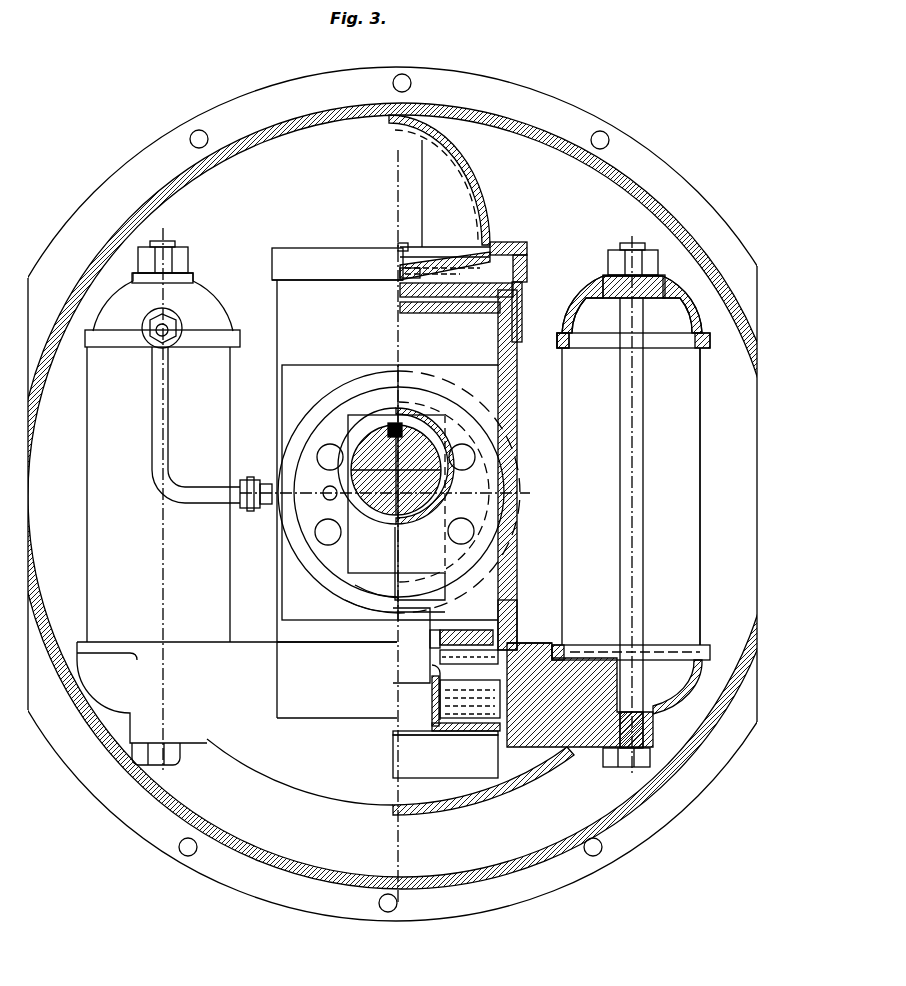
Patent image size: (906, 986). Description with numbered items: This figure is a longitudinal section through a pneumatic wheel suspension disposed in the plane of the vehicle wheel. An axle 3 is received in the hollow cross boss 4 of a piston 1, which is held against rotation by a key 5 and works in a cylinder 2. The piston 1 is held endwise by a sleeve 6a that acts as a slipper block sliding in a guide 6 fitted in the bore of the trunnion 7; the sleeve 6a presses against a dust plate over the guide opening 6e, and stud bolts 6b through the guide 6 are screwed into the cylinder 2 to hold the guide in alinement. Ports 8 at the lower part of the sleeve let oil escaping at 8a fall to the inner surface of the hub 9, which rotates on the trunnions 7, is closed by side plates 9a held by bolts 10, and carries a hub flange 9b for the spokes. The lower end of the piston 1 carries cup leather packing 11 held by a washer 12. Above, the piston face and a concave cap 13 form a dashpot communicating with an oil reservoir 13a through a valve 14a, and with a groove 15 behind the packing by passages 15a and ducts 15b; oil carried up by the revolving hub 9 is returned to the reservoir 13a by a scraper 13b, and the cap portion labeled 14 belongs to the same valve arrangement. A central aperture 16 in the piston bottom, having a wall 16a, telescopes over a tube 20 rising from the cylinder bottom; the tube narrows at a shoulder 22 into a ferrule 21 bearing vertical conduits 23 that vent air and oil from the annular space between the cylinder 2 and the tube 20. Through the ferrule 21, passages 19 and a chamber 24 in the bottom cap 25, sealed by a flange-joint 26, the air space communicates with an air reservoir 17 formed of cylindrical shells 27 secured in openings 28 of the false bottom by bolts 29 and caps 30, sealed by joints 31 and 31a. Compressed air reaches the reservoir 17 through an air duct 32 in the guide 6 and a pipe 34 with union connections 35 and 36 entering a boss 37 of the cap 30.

The piston 1 is at (498, 362).
The cylinder 2 is at (520, 562).
The axle 3 is at (382, 516).
The hollow cross boss 4 is at (446, 484).
The key 5 is at (390, 426).
The guide 6 is at (340, 564).
The sleeve 6a is at (348, 448).
The stud bolt 6b is at (314, 452).
The guide opening 6e is at (420, 563).
The trunnion 7 is at (326, 565).
The port 8 is at (386, 592).
The oil escape point 8a is at (392, 588).
The hub 9 is at (545, 138).
The side plate 9a is at (390, 789).
The hub flange 9b is at (538, 100).
The bolt 10 is at (612, 138).
The packing 11 is at (529, 634).
The washer 12 is at (469, 655).
The concave cap 13 is at (538, 264).
The reservoir 13a is at (428, 262).
The scraper 13b is at (480, 185).
The valve 14 is at (515, 292).
The valve 14a is at (400, 280).
The groove 15 is at (514, 636).
The passage 15a is at (470, 313).
The duct 15b is at (522, 332).
The aperture 16 is at (438, 644).
The aperture wall 16a is at (436, 630).
The air reservoir 17 is at (393, 504).
The passage 19 is at (525, 760).
The tube 20 is at (444, 682).
The ferrule 21 is at (430, 630).
The shoulder 22 is at (432, 665).
The conduit 23 is at (432, 700).
The chamber 24 is at (445, 756).
The bottom cap 25 is at (337, 705).
The flange-joint 26 is at (492, 735).
The cylindrical shell 27 is at (703, 452).
The opening 28 is at (648, 652).
The bolt 29 is at (640, 516).
The cap 30 is at (692, 312).
The joint 31 is at (563, 345).
The joint 31a is at (565, 648).
The air duct 32 is at (327, 489).
The pipe 34 is at (168, 406).
The union connection 35 is at (251, 479).
The union connection 36 is at (170, 332).
The boss 37 is at (150, 322).